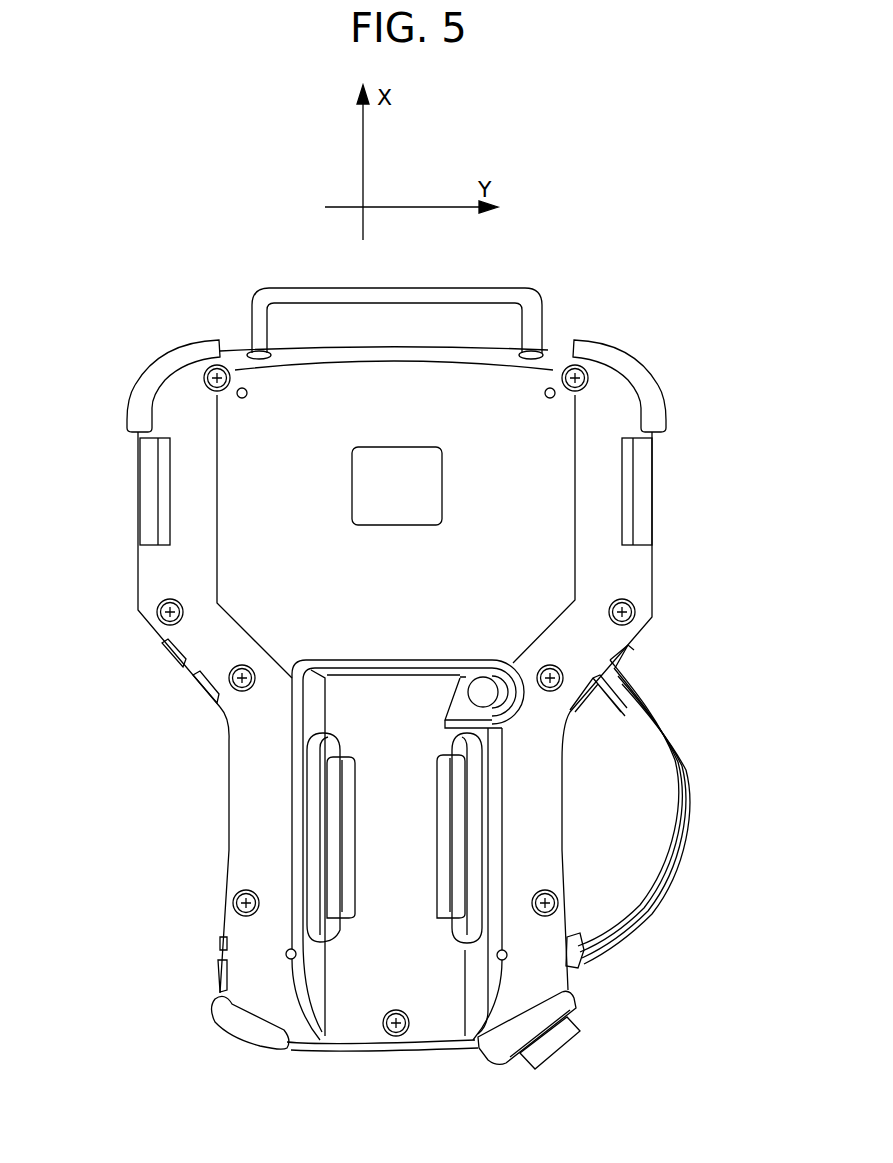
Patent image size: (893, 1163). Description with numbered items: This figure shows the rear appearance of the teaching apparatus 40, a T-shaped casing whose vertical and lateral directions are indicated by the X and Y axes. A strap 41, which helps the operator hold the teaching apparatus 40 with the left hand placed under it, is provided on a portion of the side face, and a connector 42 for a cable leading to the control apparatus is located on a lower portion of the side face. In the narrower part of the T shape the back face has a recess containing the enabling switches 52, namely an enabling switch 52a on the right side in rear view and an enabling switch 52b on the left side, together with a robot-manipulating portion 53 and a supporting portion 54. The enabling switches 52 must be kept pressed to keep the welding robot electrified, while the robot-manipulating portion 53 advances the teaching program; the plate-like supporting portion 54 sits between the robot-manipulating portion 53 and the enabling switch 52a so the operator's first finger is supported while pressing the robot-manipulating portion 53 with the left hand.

The teaching apparatus 40 is at (578, 223).
The strap 41 is at (663, 887).
The connector 42 is at (550, 1040).
The enabling switches 52 is at (82, 785).
The enabling switch 52a is at (460, 808).
The enabling switch 52b is at (332, 833).
The robot-manipulating portion 53 is at (487, 692).
The supporting portion 54 is at (463, 723).